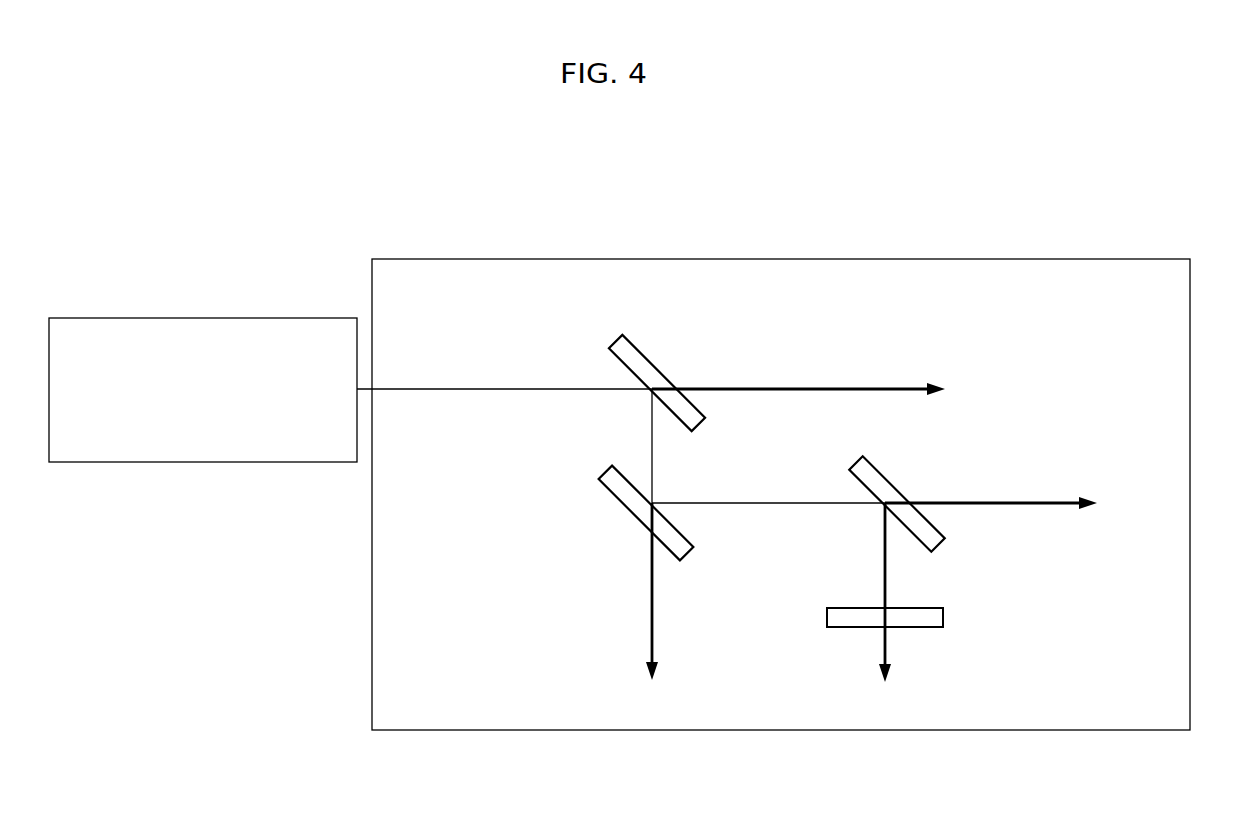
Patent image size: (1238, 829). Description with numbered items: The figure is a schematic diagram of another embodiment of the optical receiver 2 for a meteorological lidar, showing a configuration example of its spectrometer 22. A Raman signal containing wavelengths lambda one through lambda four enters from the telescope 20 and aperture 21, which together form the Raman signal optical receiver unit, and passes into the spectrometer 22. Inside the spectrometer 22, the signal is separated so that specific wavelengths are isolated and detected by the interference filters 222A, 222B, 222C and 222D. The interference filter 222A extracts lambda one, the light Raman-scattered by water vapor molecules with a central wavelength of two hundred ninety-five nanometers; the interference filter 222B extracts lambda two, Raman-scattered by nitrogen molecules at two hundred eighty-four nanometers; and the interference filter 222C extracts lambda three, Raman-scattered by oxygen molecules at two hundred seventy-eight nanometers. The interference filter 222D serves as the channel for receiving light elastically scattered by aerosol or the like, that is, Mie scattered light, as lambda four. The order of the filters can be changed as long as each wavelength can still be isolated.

The optical receiver 2 is at (160, 198).
The telescope 20 is at (203, 358).
The aperture 21 is at (150, 318).
The spectrometer 22 is at (1047, 259).
The interference filter 222A is at (658, 367).
The interference filter 222B is at (620, 503).
The interference filter 222C is at (943, 540).
The interference filter 222D is at (930, 627).